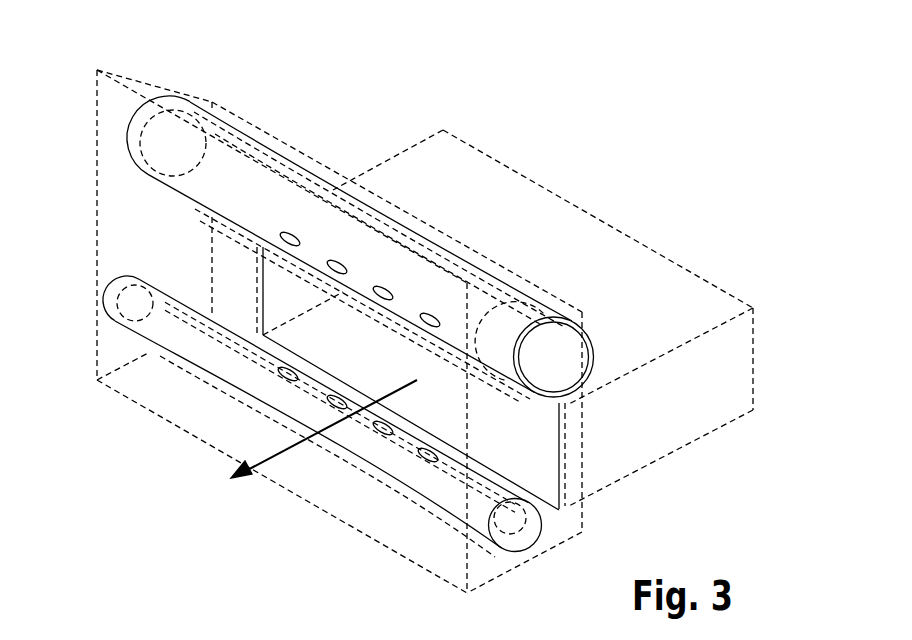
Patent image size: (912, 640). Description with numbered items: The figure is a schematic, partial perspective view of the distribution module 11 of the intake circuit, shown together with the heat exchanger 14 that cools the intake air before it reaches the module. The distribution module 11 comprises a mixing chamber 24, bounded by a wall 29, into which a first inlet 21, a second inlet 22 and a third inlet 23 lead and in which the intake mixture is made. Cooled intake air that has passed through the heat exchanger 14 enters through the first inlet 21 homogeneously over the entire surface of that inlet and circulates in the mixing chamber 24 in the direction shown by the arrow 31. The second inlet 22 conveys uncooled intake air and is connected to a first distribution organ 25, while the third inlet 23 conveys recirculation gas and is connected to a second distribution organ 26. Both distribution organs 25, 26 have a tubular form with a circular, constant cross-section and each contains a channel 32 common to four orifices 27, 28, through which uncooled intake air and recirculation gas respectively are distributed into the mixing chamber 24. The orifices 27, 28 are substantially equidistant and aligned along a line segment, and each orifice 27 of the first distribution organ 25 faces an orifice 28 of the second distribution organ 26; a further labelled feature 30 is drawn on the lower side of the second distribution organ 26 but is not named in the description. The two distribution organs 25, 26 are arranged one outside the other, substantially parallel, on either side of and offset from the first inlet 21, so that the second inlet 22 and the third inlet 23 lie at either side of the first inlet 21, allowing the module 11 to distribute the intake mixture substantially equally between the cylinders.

The distribution module 11 is at (290, 105).
The heat exchanger 14 is at (710, 380).
The first inlet 21 is at (530, 437).
The second inlet 22 is at (553, 354).
The third inlet 23 is at (124, 290).
The mixing chamber 24 is at (148, 238).
The first distribution organ 25 is at (217, 182).
The second distribution organ 26 is at (440, 483).
The orifices 27 is at (300, 239).
The orifices 28 is at (328, 402).
The wall 29 is at (140, 88).
The lower side of lower tube 30 is at (405, 525).
The arrow 31 is at (262, 480).
The channel 32 is at (303, 181).